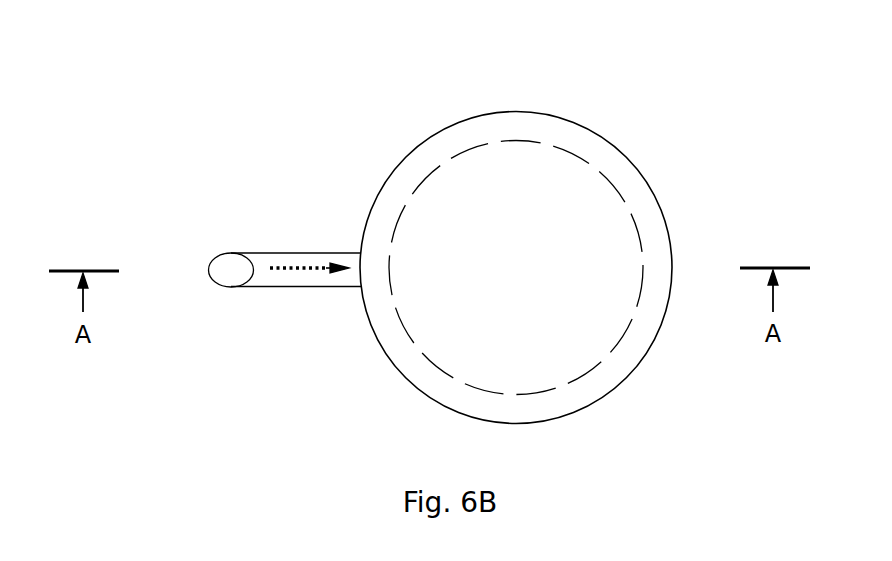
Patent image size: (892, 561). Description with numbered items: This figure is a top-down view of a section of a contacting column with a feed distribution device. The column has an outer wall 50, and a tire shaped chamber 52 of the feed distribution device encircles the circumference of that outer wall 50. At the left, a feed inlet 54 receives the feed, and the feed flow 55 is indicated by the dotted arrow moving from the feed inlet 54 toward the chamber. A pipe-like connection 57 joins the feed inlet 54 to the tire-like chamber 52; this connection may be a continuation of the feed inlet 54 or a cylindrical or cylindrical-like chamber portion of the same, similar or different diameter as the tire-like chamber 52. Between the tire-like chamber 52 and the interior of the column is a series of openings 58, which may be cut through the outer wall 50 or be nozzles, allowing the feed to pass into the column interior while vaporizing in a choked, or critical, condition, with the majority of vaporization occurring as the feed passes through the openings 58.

The outer wall 50 is at (600, 168).
The tire shaped chamber 52 is at (662, 207).
The feed inlet 54 is at (221, 272).
The feed flow 55 is at (288, 266).
The pipe-like connection 57 is at (315, 287).
The openings 58 is at (453, 136).